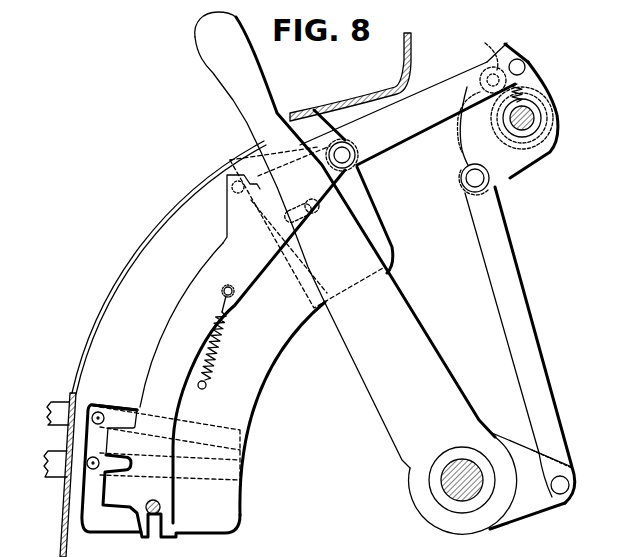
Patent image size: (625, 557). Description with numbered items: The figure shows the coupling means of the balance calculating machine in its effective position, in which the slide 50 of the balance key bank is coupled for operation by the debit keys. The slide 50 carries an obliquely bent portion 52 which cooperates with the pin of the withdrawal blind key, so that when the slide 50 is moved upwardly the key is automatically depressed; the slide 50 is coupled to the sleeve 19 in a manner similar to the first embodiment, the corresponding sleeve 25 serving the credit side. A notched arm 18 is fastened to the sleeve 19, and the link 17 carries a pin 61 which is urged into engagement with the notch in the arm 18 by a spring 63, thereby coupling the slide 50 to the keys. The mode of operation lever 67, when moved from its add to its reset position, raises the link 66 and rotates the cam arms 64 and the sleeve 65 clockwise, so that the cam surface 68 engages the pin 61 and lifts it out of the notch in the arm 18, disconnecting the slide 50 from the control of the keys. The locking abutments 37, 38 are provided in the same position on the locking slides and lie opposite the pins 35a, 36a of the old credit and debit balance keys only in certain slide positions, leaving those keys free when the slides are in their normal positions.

The link 17 is at (436, 100).
The notched arm 18 is at (505, 49).
The sleeve 19 is at (540, 123).
The sleeve 25 is at (548, 150).
The key pin 35a is at (100, 411).
The key pin 36a is at (93, 470).
The locking abutment 37 is at (92, 434).
The locking abutment 38 is at (81, 507).
The slide 50 is at (197, 279).
The obliquely bent portion 52 is at (230, 216).
The pin 61 is at (485, 43).
The spring 63 is at (531, 83).
The cam arm 64 is at (509, 167).
The sleeve 65 is at (550, 98).
The link 66 is at (515, 293).
The mode of operation lever 67 is at (243, 97).
The cam surface 68 is at (481, 72).